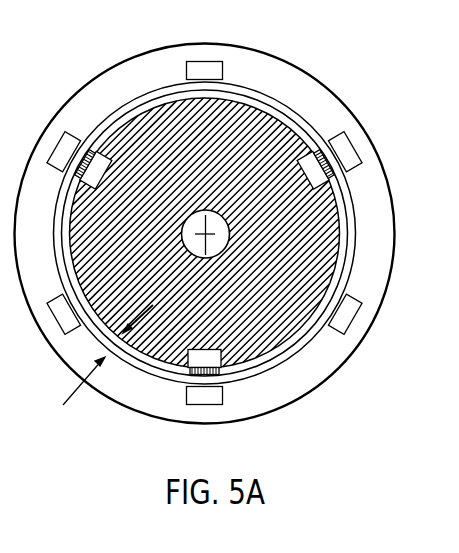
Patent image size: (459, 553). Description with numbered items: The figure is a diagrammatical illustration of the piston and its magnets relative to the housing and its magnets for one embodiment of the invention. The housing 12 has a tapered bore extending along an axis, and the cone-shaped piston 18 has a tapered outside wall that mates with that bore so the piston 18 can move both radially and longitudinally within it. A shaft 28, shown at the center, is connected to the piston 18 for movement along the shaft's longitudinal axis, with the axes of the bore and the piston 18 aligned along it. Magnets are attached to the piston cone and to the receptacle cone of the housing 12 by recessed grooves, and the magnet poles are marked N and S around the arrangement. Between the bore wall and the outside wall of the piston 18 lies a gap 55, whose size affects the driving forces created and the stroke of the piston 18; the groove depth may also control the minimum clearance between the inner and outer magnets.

The housing 12 is at (339, 111).
The piston 18 is at (330, 220).
The shaft 28 is at (232, 248).
The gap 55 is at (84, 388).
The north magnetic pole N is at (204, 68).
The south magnetic pole S is at (60, 152).